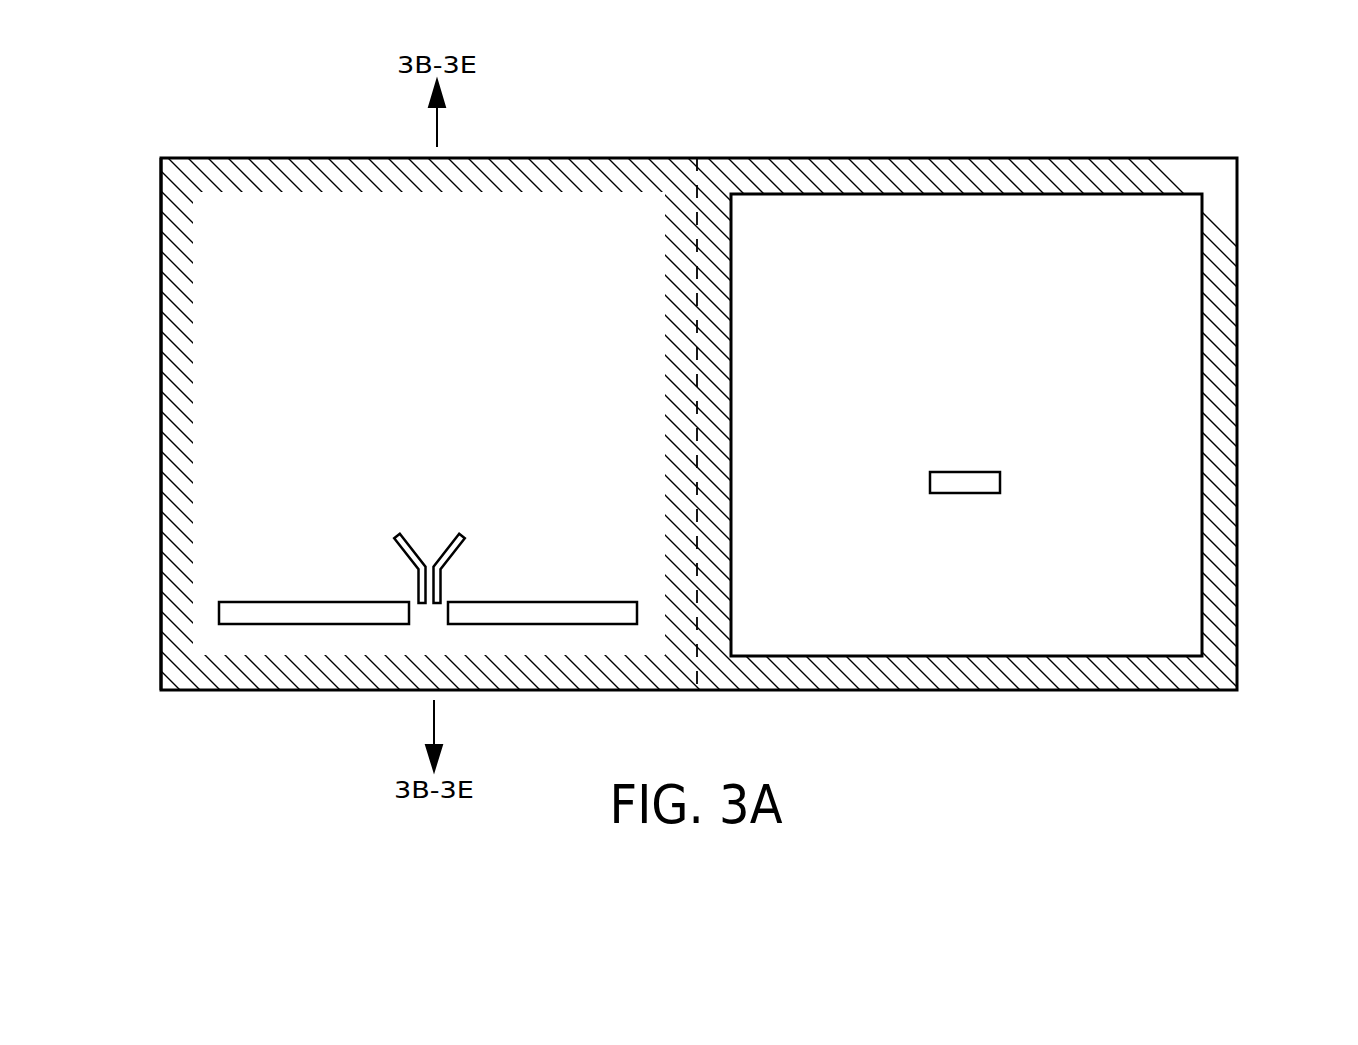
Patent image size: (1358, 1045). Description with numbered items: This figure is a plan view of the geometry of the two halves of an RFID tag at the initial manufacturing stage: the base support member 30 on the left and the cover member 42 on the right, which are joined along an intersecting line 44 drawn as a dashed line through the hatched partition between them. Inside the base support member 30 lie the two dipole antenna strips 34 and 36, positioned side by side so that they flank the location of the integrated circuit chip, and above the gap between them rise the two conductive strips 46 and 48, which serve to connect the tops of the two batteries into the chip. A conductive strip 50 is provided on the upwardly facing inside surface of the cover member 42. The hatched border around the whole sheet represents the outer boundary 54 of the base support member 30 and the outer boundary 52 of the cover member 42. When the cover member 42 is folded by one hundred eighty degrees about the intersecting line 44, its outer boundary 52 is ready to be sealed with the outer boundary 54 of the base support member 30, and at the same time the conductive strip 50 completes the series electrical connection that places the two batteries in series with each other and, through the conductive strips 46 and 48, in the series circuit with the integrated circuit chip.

The base support member 30 is at (446, 368).
The dipole antenna strip 34 is at (555, 610).
The dipole antenna strip 36 is at (302, 612).
The cover member 42 is at (985, 371).
The intersecting line 44 is at (698, 160).
The conductive strip 46 is at (395, 536).
The conductive strip 48 is at (463, 537).
The conductive strip 50 is at (965, 478).
The outer boundary 52 is at (1226, 237).
The outer boundary 54 is at (173, 234).